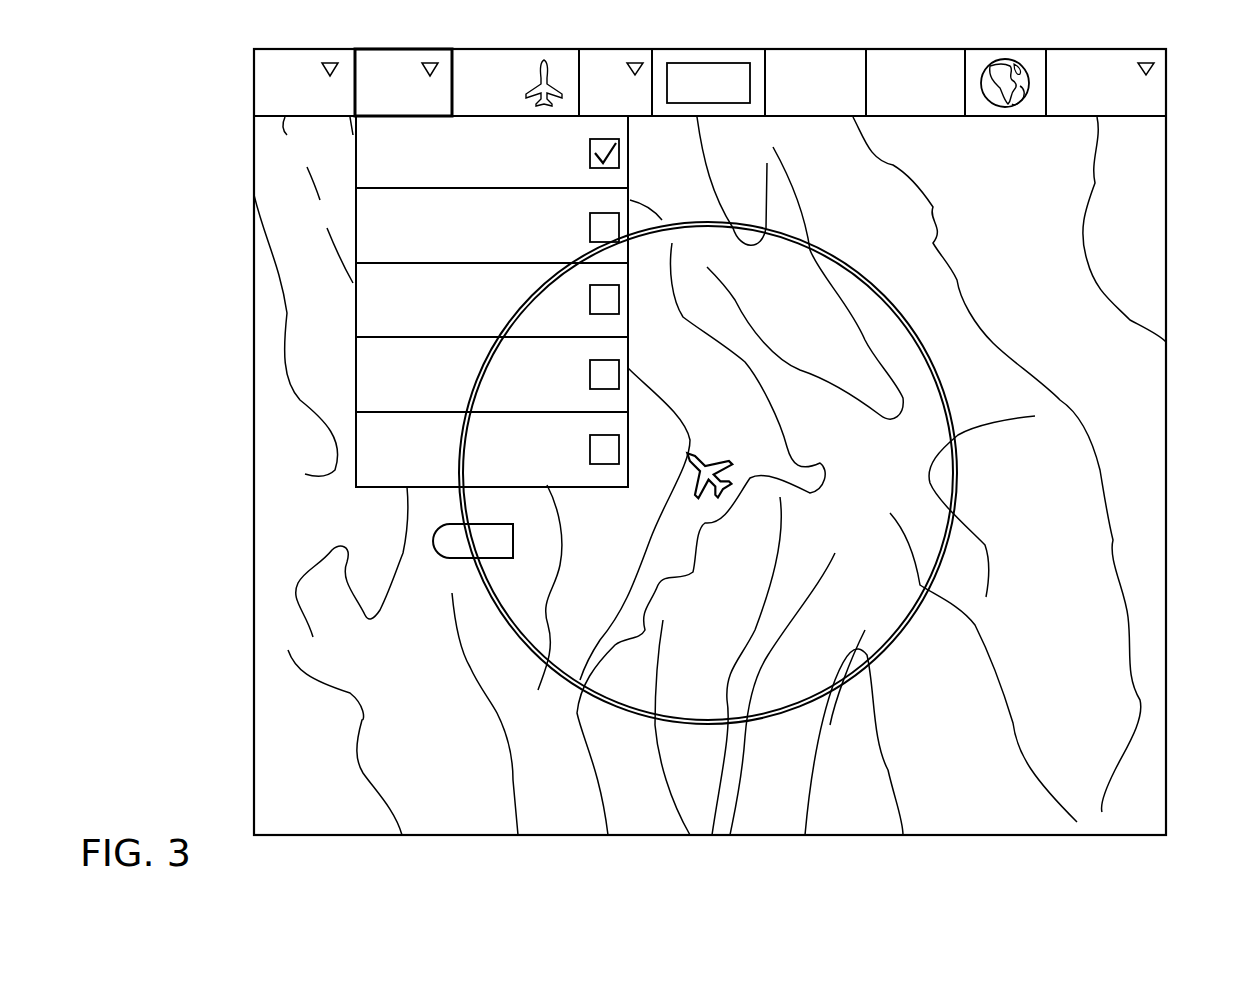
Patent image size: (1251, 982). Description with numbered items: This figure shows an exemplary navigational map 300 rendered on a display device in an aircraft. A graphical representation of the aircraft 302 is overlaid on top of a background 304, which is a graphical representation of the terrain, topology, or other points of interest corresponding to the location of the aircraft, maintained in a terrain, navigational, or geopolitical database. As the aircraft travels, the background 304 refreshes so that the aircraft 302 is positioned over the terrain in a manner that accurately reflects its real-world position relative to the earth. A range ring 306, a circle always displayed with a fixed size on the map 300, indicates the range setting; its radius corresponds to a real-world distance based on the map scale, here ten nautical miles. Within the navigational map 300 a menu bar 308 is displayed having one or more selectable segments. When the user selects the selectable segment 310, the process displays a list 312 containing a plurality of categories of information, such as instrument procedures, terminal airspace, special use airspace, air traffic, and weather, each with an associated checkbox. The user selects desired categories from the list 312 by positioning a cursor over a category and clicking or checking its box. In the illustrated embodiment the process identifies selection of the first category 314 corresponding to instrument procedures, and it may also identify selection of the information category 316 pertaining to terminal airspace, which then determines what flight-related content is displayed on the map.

The navigational map 300 is at (1170, 350).
The graphical representation of the aircraft 302 is at (706, 447).
The background 304 is at (446, 759).
The range ring 306 is at (695, 495).
The menu bar 308 is at (248, 81).
The selectable segment 310 is at (404, 48).
The list 312 is at (344, 303).
The first category 314 is at (356, 160).
The information category 316 is at (356, 226).